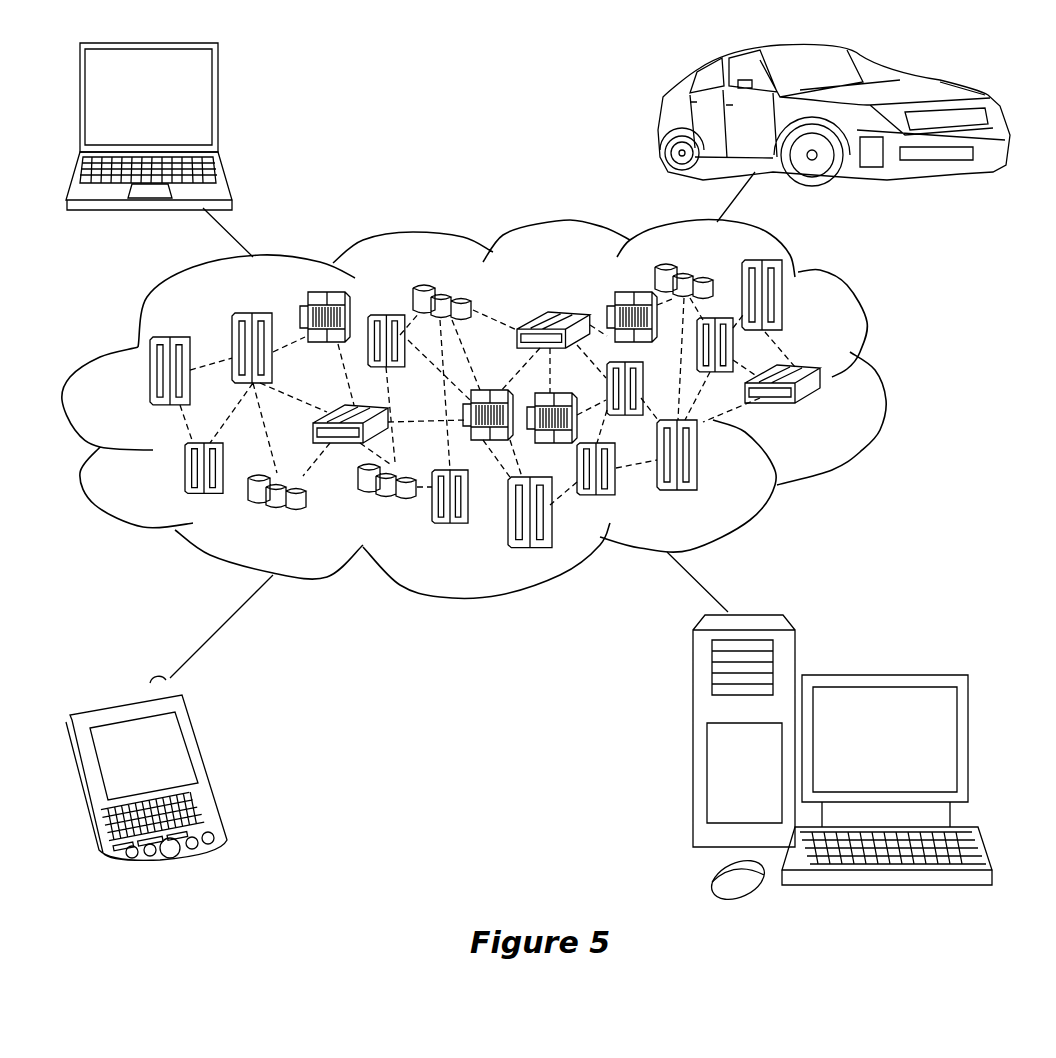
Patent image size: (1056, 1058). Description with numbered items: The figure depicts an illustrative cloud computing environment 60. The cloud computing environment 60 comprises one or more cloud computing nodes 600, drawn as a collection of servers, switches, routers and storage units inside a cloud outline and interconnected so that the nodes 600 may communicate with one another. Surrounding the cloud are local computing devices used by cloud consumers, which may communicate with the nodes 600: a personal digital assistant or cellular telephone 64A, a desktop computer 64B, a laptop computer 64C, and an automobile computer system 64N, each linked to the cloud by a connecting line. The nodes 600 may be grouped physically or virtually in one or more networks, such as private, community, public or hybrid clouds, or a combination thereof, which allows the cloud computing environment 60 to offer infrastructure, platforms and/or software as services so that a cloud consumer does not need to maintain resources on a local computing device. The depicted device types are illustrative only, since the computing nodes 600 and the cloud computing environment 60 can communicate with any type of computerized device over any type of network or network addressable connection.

The cloud computing environment 60 is at (882, 383).
The cloud computing nodes 600 is at (827, 413).
The personal digital assistant or cellular telephone 64A is at (210, 770).
The desktop computer 64B is at (882, 673).
The laptop computer 64C is at (218, 104).
The automobile computer system 64N is at (660, 118).